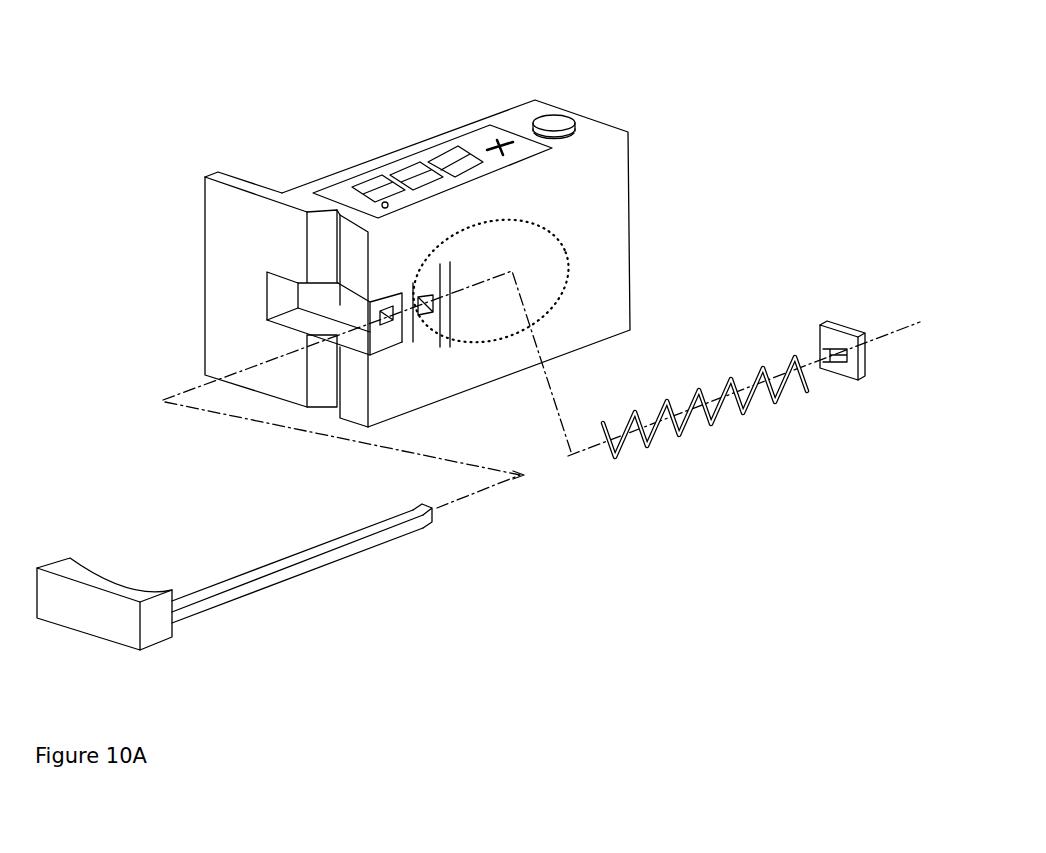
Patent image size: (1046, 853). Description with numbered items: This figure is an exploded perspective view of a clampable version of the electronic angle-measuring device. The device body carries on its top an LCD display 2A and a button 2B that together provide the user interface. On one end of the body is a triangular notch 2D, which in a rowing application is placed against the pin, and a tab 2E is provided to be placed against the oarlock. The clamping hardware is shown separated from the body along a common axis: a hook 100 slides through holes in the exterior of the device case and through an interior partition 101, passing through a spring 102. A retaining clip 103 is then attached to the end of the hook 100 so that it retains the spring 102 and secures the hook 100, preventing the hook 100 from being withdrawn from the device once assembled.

The LCD display 2A is at (398, 162).
The button 2B is at (537, 115).
The triangular notch 2D is at (318, 409).
The tab 2E is at (215, 212).
The hook 100 is at (265, 583).
The interior partition 101 is at (452, 276).
The spring 102 is at (703, 428).
The retaining clip 103 is at (851, 325).